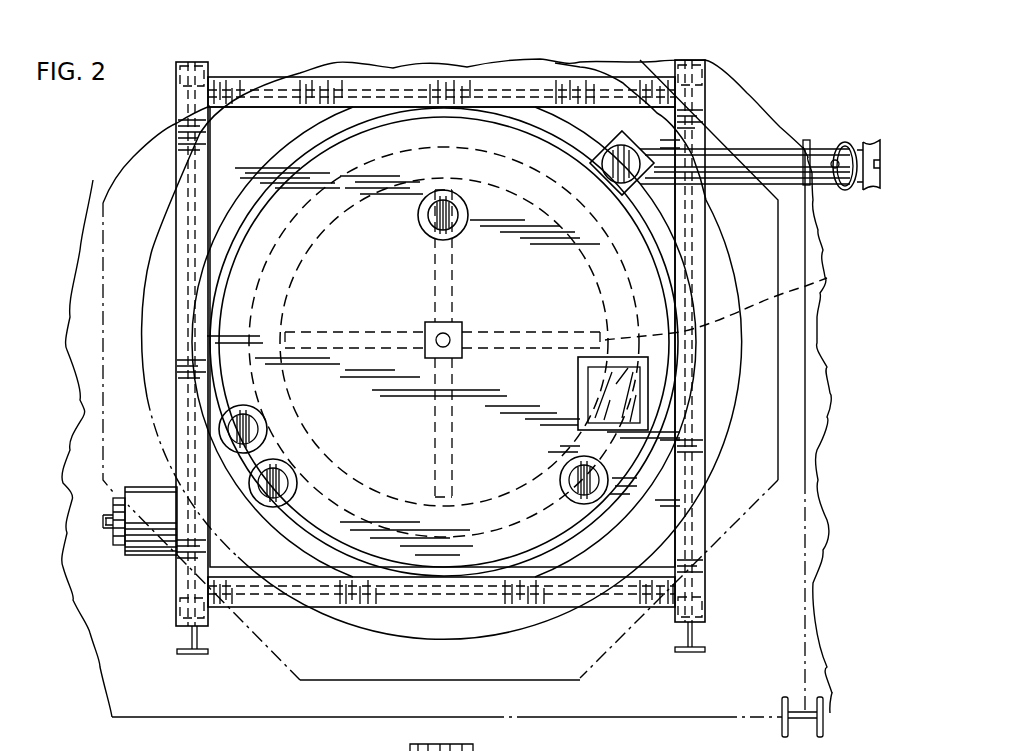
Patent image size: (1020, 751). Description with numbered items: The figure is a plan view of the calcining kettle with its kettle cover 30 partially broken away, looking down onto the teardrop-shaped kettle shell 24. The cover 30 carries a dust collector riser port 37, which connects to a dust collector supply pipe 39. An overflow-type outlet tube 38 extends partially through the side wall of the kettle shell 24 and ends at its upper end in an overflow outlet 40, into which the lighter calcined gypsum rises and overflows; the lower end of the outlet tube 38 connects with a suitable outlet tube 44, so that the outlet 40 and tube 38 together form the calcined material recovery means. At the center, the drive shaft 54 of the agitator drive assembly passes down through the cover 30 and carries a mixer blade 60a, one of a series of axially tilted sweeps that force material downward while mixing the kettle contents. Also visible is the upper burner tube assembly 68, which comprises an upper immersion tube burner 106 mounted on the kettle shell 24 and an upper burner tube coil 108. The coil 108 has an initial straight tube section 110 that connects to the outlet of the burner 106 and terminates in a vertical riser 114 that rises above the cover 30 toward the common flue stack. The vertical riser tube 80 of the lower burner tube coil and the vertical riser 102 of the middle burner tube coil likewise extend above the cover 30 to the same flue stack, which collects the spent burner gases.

The kettle shell 24 is at (560, 543).
The kettle cover 30 is at (417, 557).
The dust collector riser port 37 is at (460, 203).
The overflow-type outlet tube 38 is at (758, 150).
The dust collector supply pipe 39 is at (428, 200).
The overflow outlet 40 is at (635, 133).
The outlet tube 44 is at (862, 140).
The drive shaft 54 is at (462, 332).
The mixer blade 60a is at (820, 278).
The upper burner tube assembly 68 is at (250, 246).
The vertical riser tube 80 is at (222, 408).
The vertical riser 102 is at (250, 477).
The upper immersion tube burner 106 is at (138, 547).
The upper burner tube coil 108 is at (248, 290).
The initial straight tube section 110 is at (293, 533).
The vertical riser 114 is at (607, 468).